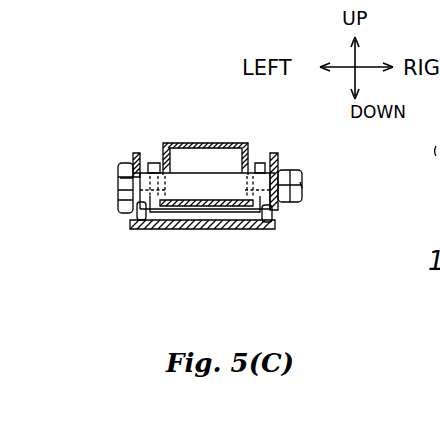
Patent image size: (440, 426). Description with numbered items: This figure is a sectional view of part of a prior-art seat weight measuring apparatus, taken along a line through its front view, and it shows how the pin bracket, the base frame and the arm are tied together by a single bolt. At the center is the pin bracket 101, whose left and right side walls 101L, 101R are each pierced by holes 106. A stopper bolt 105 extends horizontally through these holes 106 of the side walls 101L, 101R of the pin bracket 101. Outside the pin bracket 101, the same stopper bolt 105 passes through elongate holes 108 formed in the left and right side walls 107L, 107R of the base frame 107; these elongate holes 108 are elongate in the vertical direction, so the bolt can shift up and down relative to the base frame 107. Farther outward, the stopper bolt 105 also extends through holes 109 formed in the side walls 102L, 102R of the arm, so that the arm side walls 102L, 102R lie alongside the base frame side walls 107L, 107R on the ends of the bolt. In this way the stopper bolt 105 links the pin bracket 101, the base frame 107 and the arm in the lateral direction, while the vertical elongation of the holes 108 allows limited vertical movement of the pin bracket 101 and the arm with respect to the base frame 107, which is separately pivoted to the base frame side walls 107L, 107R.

The pin bracket 101 is at (200, 143).
The left side wall of pin bracket 101L is at (163, 152).
The right side wall of pin bracket 101R is at (250, 153).
The left side wall of arm 102L is at (133, 226).
The right side wall of arm 102R is at (273, 230).
The stopper bolt 105 is at (300, 197).
The holes 106 is at (160, 192).
The base frame 107 is at (222, 230).
The left side wall of base frame 107L is at (127, 220).
The right side wall of base frame 107R is at (297, 222).
The elongate holes 108 is at (300, 185).
The holes 109 is at (285, 172).